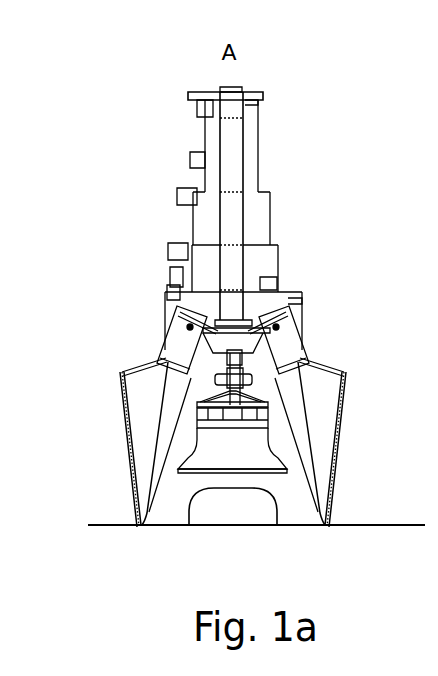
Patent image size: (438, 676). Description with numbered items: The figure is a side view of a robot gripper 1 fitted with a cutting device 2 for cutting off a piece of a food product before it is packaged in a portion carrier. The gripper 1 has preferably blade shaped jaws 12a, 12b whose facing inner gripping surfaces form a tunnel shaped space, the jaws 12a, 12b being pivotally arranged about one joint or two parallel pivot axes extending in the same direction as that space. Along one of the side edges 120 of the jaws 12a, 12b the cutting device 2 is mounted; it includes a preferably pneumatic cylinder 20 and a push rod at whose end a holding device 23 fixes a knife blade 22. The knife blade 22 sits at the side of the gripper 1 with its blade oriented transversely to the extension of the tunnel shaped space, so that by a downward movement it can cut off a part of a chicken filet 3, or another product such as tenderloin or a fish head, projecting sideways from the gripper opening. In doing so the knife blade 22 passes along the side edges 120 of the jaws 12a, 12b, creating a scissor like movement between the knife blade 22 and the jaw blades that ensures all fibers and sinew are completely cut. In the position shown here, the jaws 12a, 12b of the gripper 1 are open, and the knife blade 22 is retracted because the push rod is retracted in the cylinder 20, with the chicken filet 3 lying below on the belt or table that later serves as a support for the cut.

The robot gripper 1 is at (131, 250).
The cylinder 20 is at (237, 212).
The holding device 23 is at (276, 402).
The cutting device 2 is at (217, 432).
The knife blade 22 is at (210, 450).
The chicken filet 3 is at (254, 515).
The jaw 12a is at (125, 428).
The jaw 12b is at (338, 423).
The side edge 120 is at (123, 402).